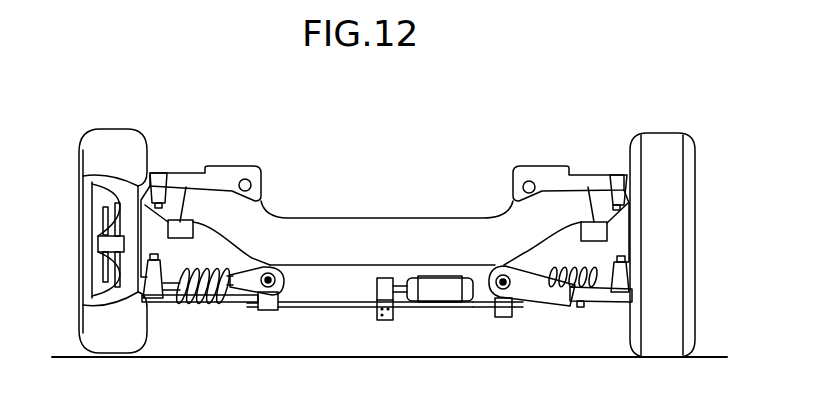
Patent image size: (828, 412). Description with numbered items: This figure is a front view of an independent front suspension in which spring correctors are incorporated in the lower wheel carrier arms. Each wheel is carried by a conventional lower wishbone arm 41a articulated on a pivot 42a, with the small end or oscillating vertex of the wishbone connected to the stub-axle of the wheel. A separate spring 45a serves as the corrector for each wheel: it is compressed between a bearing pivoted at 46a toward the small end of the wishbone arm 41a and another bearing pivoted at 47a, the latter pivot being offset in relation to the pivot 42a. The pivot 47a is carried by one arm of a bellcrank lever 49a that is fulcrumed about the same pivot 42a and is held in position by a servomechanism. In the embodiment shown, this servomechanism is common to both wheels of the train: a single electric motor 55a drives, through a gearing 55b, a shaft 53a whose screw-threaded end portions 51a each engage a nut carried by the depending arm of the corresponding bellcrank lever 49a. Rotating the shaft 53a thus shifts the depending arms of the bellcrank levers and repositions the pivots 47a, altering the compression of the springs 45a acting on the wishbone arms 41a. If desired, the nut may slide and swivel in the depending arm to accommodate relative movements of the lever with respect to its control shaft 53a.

The lower wishbone arm 41a is at (250, 250).
The pivot 42a is at (284, 273).
The spring corrector 45a is at (213, 300).
The bearing pivot 46a is at (175, 304).
The pivot 47a is at (233, 306).
The bellcrank lever 49a is at (273, 313).
The screw-threaded end portion 51a is at (262, 318).
The shaft 53a is at (343, 310).
The electric motor 55a is at (433, 307).
The gearing 55b is at (362, 288).